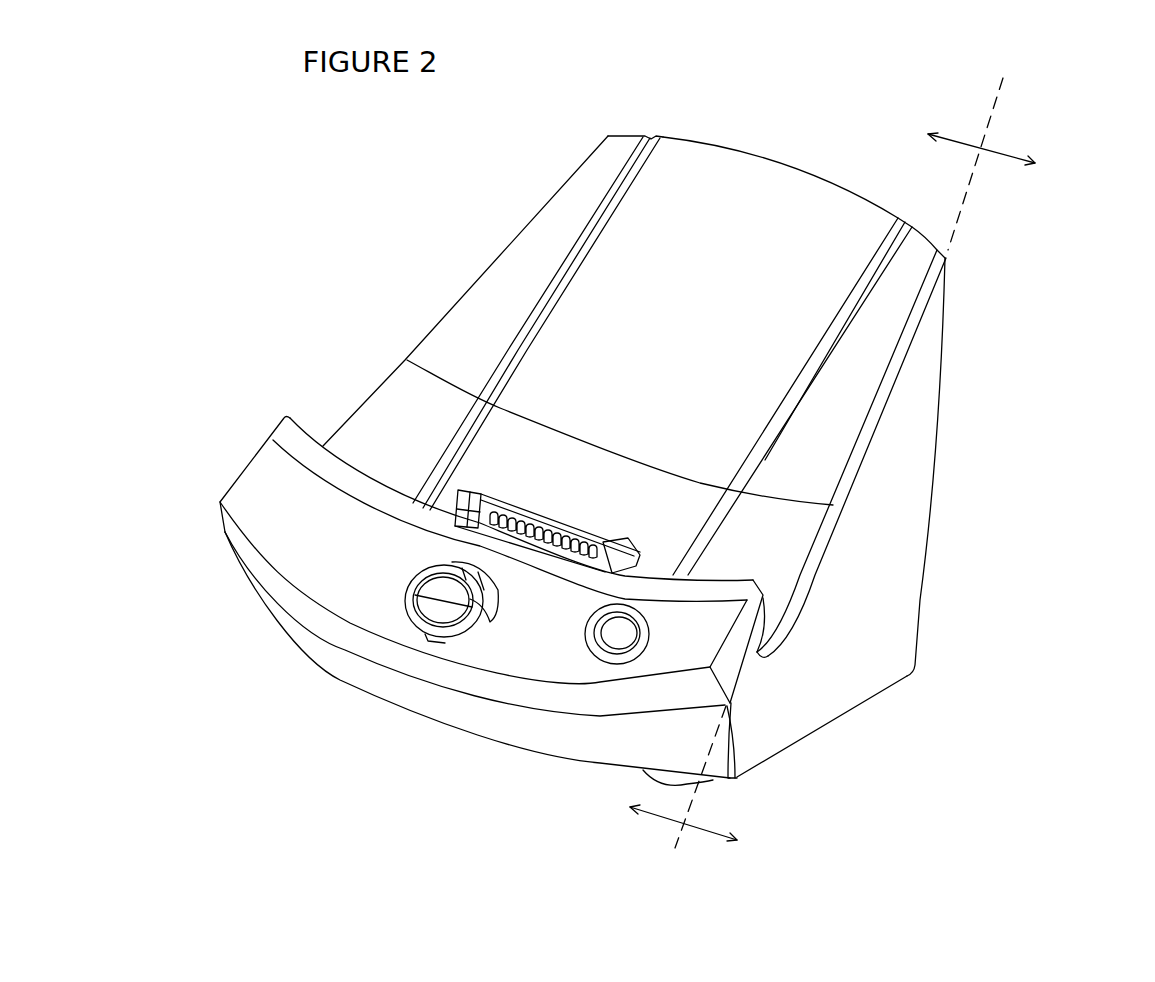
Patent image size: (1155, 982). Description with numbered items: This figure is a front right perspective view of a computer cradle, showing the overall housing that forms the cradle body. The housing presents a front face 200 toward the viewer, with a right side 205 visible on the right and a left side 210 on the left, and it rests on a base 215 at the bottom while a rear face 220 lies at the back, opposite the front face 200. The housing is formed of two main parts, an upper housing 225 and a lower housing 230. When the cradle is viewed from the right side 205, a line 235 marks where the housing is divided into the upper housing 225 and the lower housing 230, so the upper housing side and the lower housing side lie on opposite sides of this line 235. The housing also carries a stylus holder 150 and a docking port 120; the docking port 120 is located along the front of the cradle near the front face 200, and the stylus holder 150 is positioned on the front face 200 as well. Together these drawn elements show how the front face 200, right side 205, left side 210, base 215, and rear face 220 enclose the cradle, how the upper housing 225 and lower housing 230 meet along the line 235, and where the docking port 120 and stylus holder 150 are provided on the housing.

The front face 200 is at (785, 197).
The left side 210 is at (450, 298).
The rear face 220 is at (955, 333).
The upper housing 225 is at (791, 396).
The lower housing 230 is at (851, 453).
The right side 205 is at (873, 530).
The base 215 is at (792, 744).
The docking port 120 is at (480, 493).
The stylus holder 150 is at (588, 644).
The line 235 is at (829, 466).